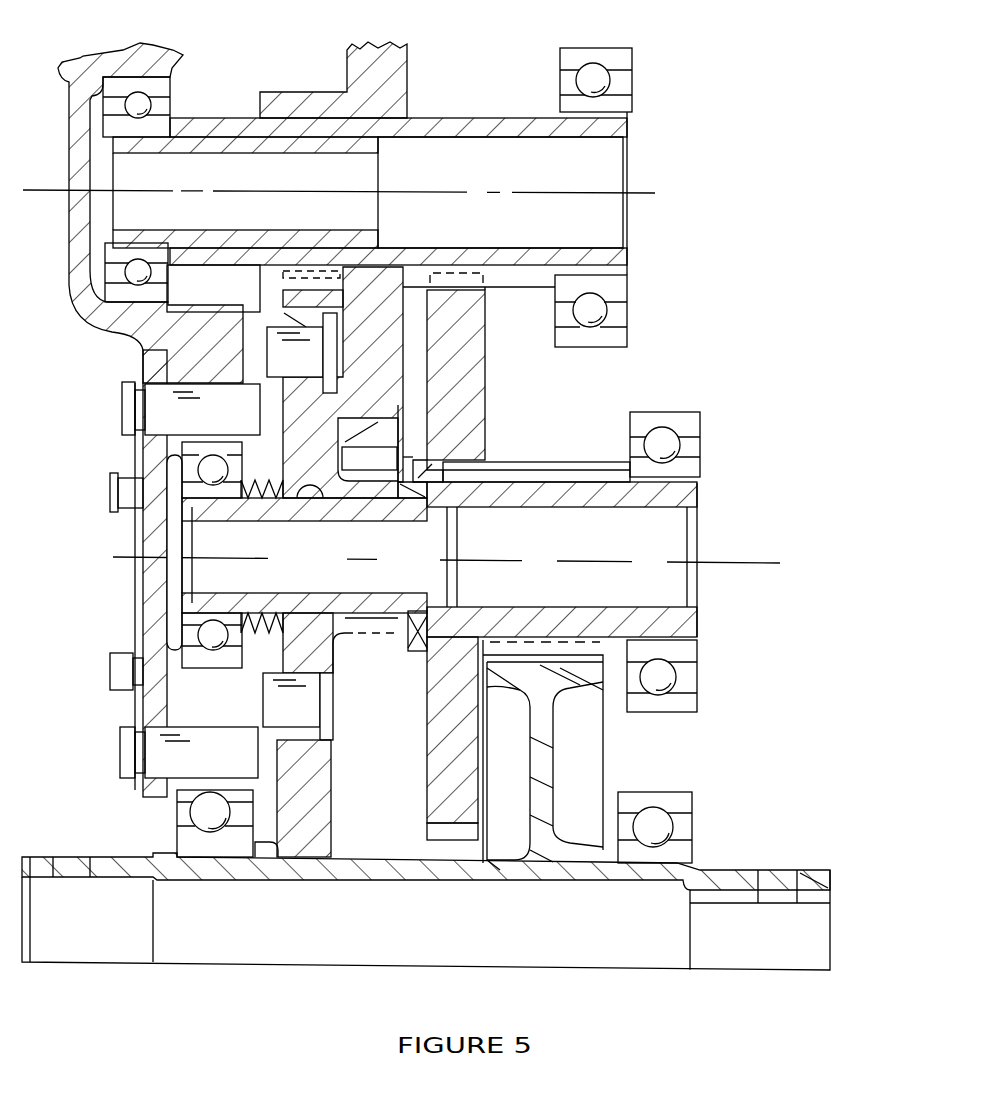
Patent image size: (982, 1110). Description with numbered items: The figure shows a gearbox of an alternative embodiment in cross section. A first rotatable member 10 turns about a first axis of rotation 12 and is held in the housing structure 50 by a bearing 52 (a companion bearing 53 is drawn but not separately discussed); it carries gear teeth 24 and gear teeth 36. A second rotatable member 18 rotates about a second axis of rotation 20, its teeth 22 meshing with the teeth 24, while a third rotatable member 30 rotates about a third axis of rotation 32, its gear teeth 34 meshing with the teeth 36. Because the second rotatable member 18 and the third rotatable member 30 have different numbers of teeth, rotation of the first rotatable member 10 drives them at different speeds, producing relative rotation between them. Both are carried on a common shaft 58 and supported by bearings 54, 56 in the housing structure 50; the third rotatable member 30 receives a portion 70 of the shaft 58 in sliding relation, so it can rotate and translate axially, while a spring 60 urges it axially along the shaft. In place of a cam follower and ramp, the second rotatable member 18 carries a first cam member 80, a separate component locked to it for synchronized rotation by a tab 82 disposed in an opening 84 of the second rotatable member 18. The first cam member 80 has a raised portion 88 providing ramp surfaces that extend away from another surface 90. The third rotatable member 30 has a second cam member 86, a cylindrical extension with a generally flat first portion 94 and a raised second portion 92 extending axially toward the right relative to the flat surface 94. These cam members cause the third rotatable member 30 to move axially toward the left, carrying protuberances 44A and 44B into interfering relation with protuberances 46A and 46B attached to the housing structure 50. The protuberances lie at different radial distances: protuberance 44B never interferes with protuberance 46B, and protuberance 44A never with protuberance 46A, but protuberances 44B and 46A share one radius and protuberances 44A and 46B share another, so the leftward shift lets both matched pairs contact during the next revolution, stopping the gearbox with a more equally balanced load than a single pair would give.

The first rotatable member 10 is at (618, 258).
The first axis of rotation 12 is at (645, 190).
The second rotatable member 18 is at (473, 392).
The second axis of rotation 20 is at (713, 560).
The teeth of the second rotatable member 22 is at (447, 303).
The gear teeth of the second segment 24 is at (517, 280).
The third rotatable member 30 is at (330, 777).
The third axis of rotation 32 is at (733, 566).
The gear teeth of the third rotatable member 34 is at (305, 307).
The gear teeth of the first segment 36 is at (268, 280).
The protuberance 44A is at (277, 690).
The protuberance 44B is at (282, 352).
The protuberance 46A is at (210, 747).
The protuberance 46B is at (230, 393).
The housing structure 50 is at (157, 575).
The bearing 52 is at (610, 57).
The bearing 53 is at (117, 82).
The bearing 54 is at (688, 422).
The bearing 56 is at (192, 492).
The shaft 58 is at (497, 497).
The spring 60 is at (253, 487).
The portion of the shaft 70 is at (324, 508).
The first cam member 80 is at (430, 493).
The tab 82 is at (430, 462).
The opening 84 is at (467, 467).
The second cam member 86 is at (360, 627).
The raised portion 88 is at (411, 510).
The surface of the first cam member 90 is at (400, 630).
The second portion 92 is at (380, 627).
The first portion 94 is at (407, 477).